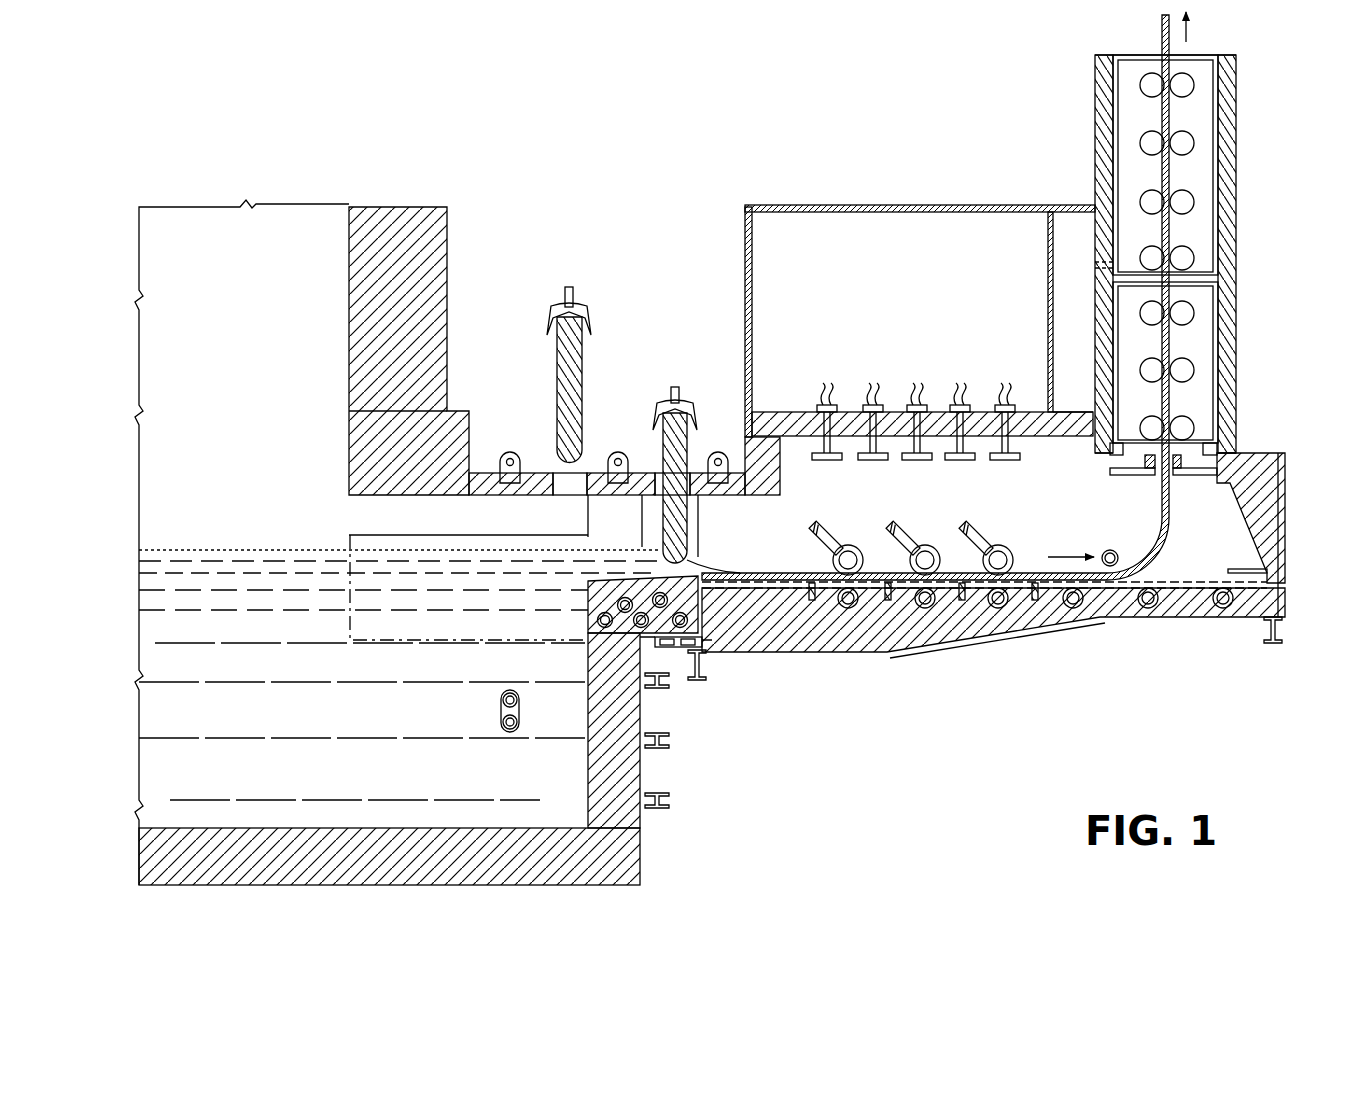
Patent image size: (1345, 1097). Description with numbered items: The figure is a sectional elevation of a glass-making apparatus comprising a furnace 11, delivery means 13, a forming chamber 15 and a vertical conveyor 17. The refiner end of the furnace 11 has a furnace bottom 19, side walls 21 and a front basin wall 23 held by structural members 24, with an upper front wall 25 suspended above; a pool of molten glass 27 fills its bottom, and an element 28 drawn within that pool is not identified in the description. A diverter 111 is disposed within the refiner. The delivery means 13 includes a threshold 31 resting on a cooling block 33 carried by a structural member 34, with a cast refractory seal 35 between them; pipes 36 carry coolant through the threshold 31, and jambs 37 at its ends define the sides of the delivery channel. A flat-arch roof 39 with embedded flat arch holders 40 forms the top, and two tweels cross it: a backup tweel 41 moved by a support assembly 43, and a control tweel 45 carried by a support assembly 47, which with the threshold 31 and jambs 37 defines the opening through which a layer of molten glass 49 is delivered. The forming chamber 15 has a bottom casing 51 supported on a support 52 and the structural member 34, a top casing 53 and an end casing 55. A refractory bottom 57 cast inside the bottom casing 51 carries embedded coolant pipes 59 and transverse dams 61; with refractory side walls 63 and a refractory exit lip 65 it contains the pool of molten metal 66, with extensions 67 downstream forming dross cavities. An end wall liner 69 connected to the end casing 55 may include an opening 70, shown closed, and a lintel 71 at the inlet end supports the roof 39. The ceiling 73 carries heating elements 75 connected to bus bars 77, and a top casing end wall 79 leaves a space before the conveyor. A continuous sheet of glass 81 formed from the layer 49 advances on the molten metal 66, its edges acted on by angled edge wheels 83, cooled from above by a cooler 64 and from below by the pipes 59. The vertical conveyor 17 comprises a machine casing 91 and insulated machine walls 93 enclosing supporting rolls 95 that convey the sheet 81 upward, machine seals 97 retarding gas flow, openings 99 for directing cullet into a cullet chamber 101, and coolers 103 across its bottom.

The furnace 11 is at (466, 216).
The delivery means 13 is at (645, 252).
The forming chamber 15 is at (888, 188).
The vertical conveyor 17 is at (1088, 98).
The furnace bottom 19 is at (335, 880).
The side walls 21 is at (256, 474).
The front basin wall 23 is at (642, 770).
The structural members 24 is at (700, 735).
The upper front wall 25 is at (447, 320).
The pool of molten glass 27 is at (318, 722).
The heating element 28 is at (500, 710).
The threshold 31 is at (588, 624).
The cooling block 33 is at (655, 650).
The structural member 34 is at (704, 672).
The cast refractory seal 35 is at (700, 648).
The pipes 36 is at (598, 603).
The jambs 37 is at (700, 530).
The roof 39 is at (505, 495).
The flat arch holders 40 is at (510, 453).
The backup tweel 41 is at (583, 385).
The support assembly 43 is at (586, 305).
The control tweel 45 is at (688, 450).
The support assembly 47 is at (688, 402).
The layer of molten glass 49 is at (692, 561).
The bottom casing 51 is at (975, 628).
The support 52 is at (1283, 638).
The top casing 53 is at (745, 272).
The end casing 55 is at (1285, 500).
The refractory bottom 57 is at (988, 625).
The pipes 59 is at (1148, 606).
The dams 61 is at (888, 610).
The refractory side walls 63 is at (815, 566).
The cooler 64 is at (1110, 550).
The refractory exit lip 65 is at (1283, 580).
The pool of molten metal 66 is at (1185, 615).
The extensions 67 is at (1232, 569).
The end wall liner 69 is at (1240, 505).
The opening 70 is at (1285, 545).
The lintel 71 is at (780, 478).
The ceiling 73 is at (770, 412).
The heating elements 75 is at (875, 462).
The bus bars 77 is at (917, 403).
The top casing end wall 79 is at (1048, 300).
The continuous sheet of glass 81 is at (1168, 345).
The angled edge wheels 83 is at (962, 546).
The machine casing 91 is at (1218, 330).
The machine walls 93 is at (1236, 366).
The supporting rolls 95 is at (1190, 155).
The machine seals 97 is at (1200, 55).
The openings 99 is at (1100, 256).
The cullet chamber 101 is at (1095, 350).
The coolers 103 is at (1135, 476).
The diverter 111 is at (405, 535).